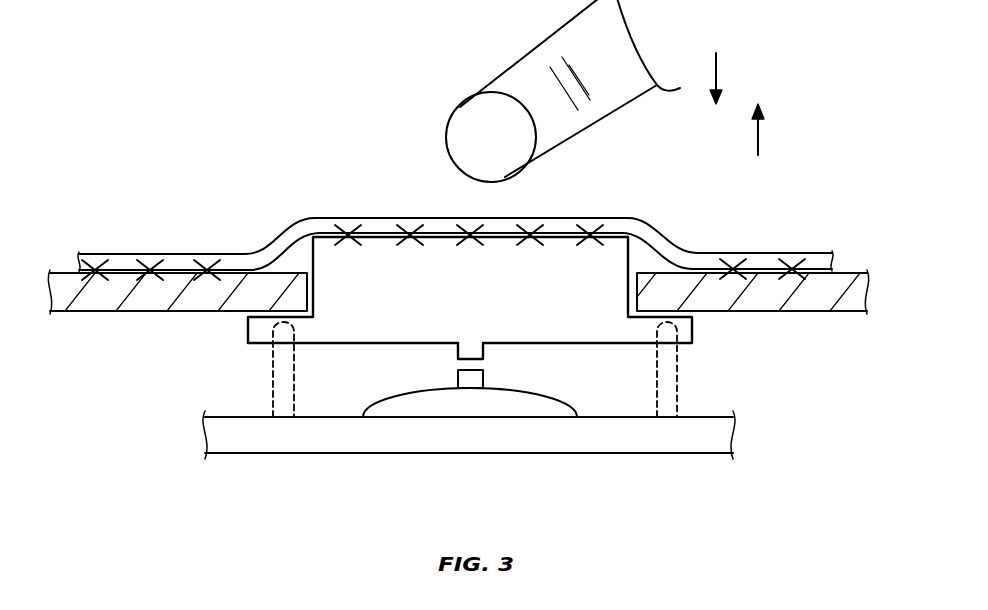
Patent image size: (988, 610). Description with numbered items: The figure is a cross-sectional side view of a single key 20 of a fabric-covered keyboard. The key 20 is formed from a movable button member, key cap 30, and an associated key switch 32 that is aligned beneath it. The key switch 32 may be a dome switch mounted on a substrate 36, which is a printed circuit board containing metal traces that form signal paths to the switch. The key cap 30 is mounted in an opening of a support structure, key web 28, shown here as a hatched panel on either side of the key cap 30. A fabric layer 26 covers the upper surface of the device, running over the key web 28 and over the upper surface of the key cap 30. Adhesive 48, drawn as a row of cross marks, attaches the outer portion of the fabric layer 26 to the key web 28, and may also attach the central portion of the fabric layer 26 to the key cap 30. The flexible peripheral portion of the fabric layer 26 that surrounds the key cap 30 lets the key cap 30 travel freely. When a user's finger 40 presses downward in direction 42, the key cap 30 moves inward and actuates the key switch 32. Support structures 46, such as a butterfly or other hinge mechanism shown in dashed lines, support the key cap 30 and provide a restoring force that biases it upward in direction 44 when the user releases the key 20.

The key 20 is at (424, 182).
The fabric layer 26 is at (120, 262).
The key web 28 is at (97, 303).
The key cap 30 is at (388, 256).
The key switch 32 is at (533, 402).
The substrate 36 is at (625, 440).
The finger 40 is at (520, 62).
The direction 42 is at (718, 70).
The direction 44 is at (760, 130).
The support structures 46 is at (272, 366).
The adhesive 48 is at (207, 264).